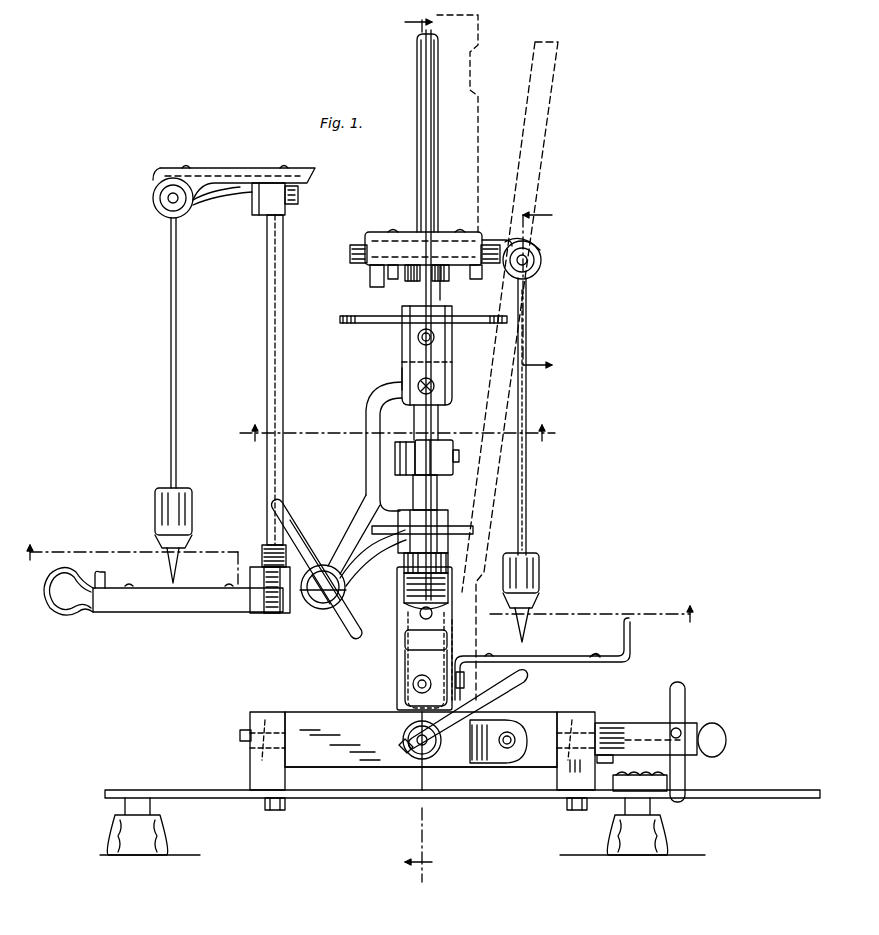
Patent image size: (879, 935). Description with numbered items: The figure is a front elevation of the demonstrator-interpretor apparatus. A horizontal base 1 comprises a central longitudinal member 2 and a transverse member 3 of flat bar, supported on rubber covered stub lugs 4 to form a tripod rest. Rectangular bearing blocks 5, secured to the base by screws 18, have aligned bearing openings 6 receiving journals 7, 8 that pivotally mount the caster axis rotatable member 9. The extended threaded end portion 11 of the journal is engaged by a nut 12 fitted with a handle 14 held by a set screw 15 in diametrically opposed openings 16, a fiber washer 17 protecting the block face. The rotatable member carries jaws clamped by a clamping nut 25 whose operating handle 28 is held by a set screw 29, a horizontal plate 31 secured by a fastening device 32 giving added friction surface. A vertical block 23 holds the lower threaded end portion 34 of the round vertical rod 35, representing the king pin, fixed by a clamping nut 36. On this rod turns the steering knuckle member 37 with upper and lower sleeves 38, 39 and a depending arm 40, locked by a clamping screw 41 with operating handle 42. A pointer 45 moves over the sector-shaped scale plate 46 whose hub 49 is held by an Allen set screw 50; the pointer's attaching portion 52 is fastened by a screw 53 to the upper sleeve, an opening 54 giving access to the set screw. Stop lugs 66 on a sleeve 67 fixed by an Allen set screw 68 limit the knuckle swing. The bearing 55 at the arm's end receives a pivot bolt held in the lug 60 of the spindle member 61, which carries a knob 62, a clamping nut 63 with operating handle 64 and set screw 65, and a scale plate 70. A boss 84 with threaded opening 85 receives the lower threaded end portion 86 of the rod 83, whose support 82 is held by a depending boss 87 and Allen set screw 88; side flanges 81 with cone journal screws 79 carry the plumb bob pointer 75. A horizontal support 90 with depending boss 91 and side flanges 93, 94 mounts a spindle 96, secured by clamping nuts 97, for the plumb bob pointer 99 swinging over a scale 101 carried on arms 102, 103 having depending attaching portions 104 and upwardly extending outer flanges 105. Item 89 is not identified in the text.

The horizontal base 1 is at (232, 800).
The central longitudinal member 2 is at (376, 798).
The transverse member 3 is at (667, 782).
The rubber covered stub lugs 4 is at (104, 827).
The rectangular bearing blocks 5 is at (253, 718).
The horizontal bearing openings 6 is at (570, 720).
The journal 7 is at (418, 448).
The journal 8 is at (232, 754).
The caster axis rotatable member 9 is at (316, 720).
The extended outer threaded end portion 11 is at (620, 730).
The nut 12 is at (646, 725).
The handle 14 is at (685, 795).
The set screw 15 is at (718, 726).
The diametrically opposed openings 16 is at (680, 728).
The washer 17 is at (605, 765).
The screws 18 is at (277, 811).
The vertical block 23 is at (397, 585).
The clamping nut 25 is at (412, 757).
The operating handle 28 is at (529, 680).
The set screw 29 is at (430, 758).
The horizontal plate 31 is at (485, 763).
The fastening device 32 is at (508, 730).
The lower threaded end portion 34 is at (404, 613).
The round vertical rod 35 is at (437, 489).
The clamping nut 36 is at (404, 564).
The steering knuckle member 37 is at (366, 492).
The upper sleeve 38 is at (416, 421).
The lower sleeve 39 is at (448, 512).
The depending arm 40 is at (355, 515).
The clamping screw 41 is at (372, 512).
The operating handle 42 is at (473, 528).
The pointer 45 is at (430, 262).
The sector-shaped scale plate 46 is at (340, 321).
The hub 49 is at (458, 343).
The Allen set screw 50 is at (418, 338).
The depending attaching portion 52 is at (400, 372).
The screw 53 is at (434, 384).
The opening 54 is at (442, 298).
The bearing 55 is at (338, 596).
The lug 60 is at (316, 610).
The spindle member 61 is at (175, 613).
The knob 62 is at (68, 612).
The clamping nut 63 is at (332, 624).
The operating handle 64 is at (354, 640).
The set screw 65 is at (362, 556).
The stop lugs 66 is at (395, 445).
The sleeve 67 is at (453, 443).
The Allen set screw 68 is at (459, 462).
The scale plate 70 is at (148, 582).
The plumb bob pointer 75 is at (170, 435).
The cone journal screws 79 is at (158, 212).
The side flanges 81 is at (216, 203).
The support 82 is at (222, 196).
The rod 83 is at (267, 388).
The boss 84 is at (258, 556).
The threaded opening 85 is at (262, 614).
The lower threaded end portion 86 is at (276, 614).
The depending boss 87 is at (254, 216).
The Allen set screw 88 is at (298, 193).
The arm 89 is at (244, 162).
The horizontal support 90 is at (478, 238).
The depending boss 91 is at (393, 279).
The side flange 93 is at (541, 260).
The side flange 94 is at (376, 287).
The spindle 96 is at (445, 268).
The clamping nuts 97 is at (350, 256).
The plumb bob pointer 99 is at (526, 486).
The scale 101 is at (405, 640).
The arm 102 is at (405, 665).
The arm 103 is at (600, 660).
The depending attaching portions 104 is at (408, 686).
The upwardly extending outer flanges 105 is at (450, 645).